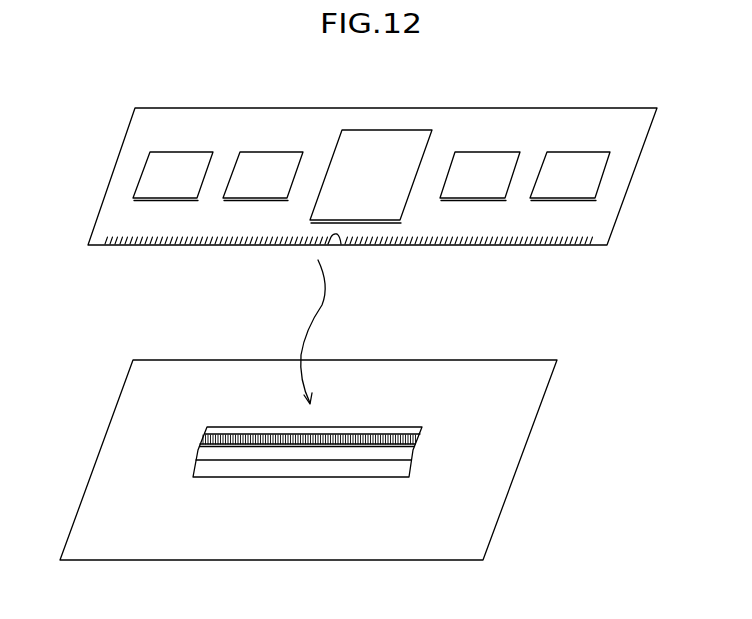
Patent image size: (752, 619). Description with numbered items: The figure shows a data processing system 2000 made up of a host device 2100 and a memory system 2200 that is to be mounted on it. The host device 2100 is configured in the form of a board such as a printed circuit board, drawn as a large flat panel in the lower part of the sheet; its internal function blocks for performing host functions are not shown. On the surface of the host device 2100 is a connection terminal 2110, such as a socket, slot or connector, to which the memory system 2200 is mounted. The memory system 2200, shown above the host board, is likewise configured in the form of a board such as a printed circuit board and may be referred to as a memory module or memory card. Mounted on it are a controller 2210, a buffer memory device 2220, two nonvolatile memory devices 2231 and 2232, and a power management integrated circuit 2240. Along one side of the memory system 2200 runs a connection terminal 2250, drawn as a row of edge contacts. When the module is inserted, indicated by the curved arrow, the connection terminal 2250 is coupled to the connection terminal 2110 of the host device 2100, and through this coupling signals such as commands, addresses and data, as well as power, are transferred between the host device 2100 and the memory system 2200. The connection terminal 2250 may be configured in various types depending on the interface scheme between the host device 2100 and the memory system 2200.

The data processing system 2000 is at (230, 77).
The memory system 2200 is at (372, 196).
The controller 2210 is at (371, 176).
The buffer memory device 2220 is at (263, 176).
The nonvolatile memory device 2231 is at (480, 176).
The nonvolatile memory device 2232 is at (570, 176).
The power management integrated circuit 2240 is at (173, 176).
The connection terminal 2250 is at (122, 244).
The host device 2100 is at (308, 460).
The connection terminal 2110 is at (438, 421).